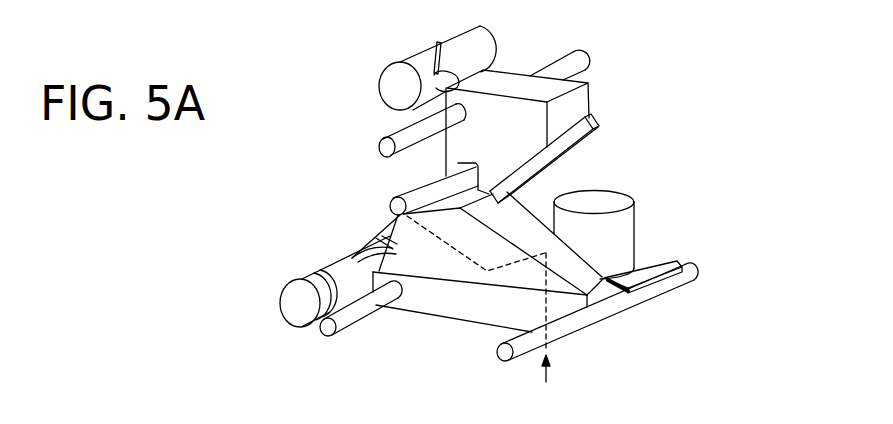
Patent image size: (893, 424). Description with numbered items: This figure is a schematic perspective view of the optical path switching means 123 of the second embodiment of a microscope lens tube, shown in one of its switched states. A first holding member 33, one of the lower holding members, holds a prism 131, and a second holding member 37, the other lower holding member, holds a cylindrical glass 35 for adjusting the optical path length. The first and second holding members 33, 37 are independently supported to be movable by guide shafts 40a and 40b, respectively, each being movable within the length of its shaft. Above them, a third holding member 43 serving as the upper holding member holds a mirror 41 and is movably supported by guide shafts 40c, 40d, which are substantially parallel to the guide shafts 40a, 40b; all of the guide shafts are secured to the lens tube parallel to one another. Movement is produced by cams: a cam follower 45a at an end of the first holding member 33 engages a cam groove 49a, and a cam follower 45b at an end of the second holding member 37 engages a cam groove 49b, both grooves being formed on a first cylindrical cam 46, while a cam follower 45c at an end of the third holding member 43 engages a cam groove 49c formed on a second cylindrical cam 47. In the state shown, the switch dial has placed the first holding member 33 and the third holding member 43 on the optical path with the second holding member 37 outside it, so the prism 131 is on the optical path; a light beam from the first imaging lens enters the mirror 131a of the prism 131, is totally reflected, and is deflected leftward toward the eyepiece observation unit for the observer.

The first holding member 33 is at (427, 295).
The cylindrical glass 35 is at (617, 200).
The second holding member 37 is at (650, 263).
The guide shaft 40a is at (321, 331).
The guide shaft 40b is at (503, 353).
The guide shaft 40c is at (563, 62).
The guide shaft 40d is at (397, 203).
The mirror 41 is at (592, 119).
The third holding member 43 is at (567, 87).
The cam follower 45a is at (373, 240).
The cam follower 45b is at (388, 241).
The cam follower 45c is at (450, 84).
The first cylindrical cam 46 is at (289, 306).
The second cylindrical cam 47 is at (388, 80).
The cam groove 49a is at (351, 258).
The cam groove 49b is at (387, 242).
The cam groove 49c is at (439, 42).
The optical path switching means 123 is at (682, 76).
The prism 131 is at (408, 252).
The mirror 131a is at (533, 273).